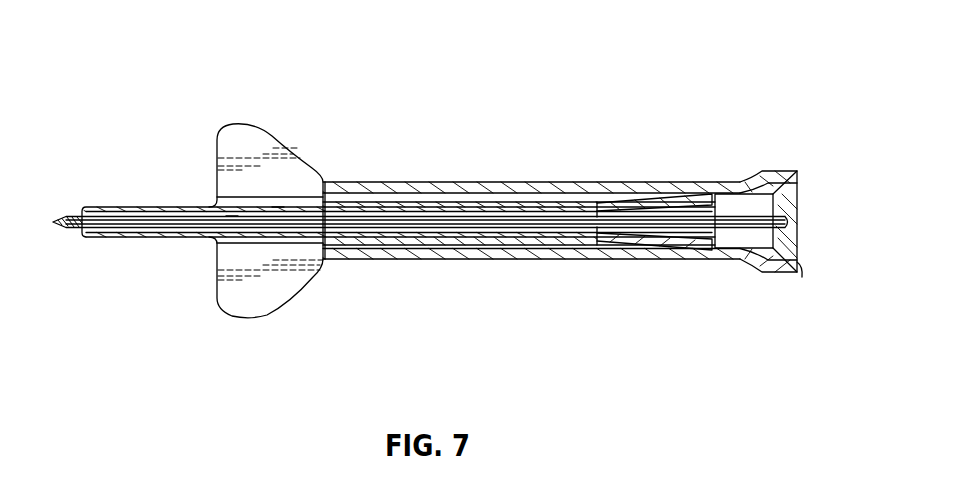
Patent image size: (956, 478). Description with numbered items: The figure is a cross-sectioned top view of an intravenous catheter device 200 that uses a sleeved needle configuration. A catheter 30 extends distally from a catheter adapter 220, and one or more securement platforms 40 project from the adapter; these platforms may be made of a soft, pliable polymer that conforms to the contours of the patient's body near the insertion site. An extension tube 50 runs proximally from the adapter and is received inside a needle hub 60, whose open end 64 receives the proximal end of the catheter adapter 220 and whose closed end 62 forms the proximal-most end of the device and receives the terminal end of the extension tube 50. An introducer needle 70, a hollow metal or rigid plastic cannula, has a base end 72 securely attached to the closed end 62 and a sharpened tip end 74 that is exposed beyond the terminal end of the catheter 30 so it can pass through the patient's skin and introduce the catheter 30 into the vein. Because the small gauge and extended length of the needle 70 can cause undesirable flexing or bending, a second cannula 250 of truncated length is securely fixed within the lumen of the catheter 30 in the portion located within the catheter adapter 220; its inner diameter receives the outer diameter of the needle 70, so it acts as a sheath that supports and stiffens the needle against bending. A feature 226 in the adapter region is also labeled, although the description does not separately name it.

The catheter device 200 is at (184, 60).
The catheter adapter 220 is at (213, 180).
The hub distal taper 226 is at (278, 206).
The second cannula 250 is at (232, 218).
The securement platform 40 is at (235, 318).
The catheter 30 is at (148, 237).
The sharpened tip end 74 is at (73, 225).
The open end 64 is at (323, 263).
The extension tube 50 is at (433, 201).
The needle hub 60 is at (502, 259).
The introducer needle 70 is at (680, 236).
The closed end 62 is at (800, 218).
The base end 72 is at (805, 284).